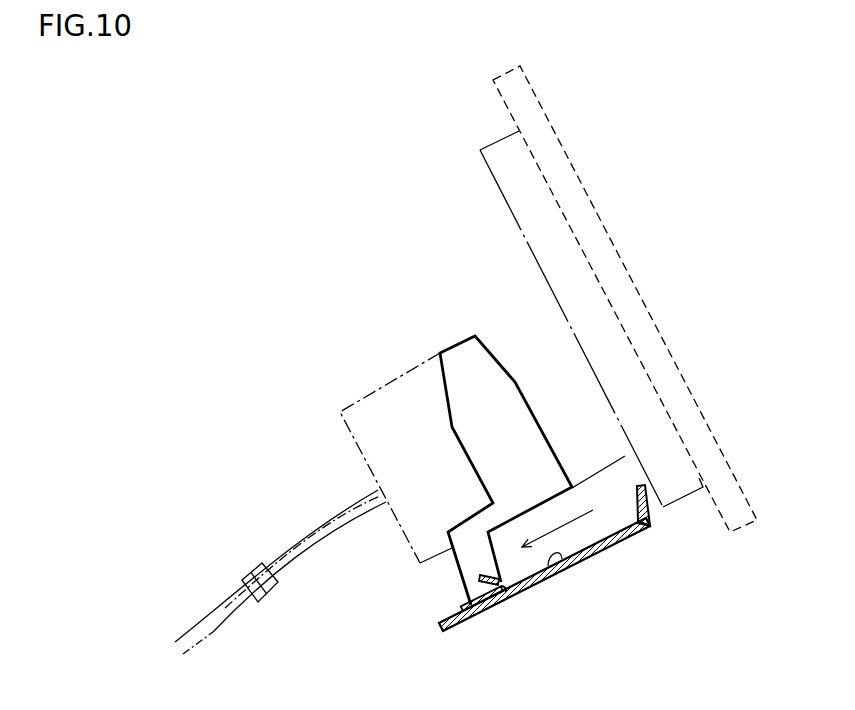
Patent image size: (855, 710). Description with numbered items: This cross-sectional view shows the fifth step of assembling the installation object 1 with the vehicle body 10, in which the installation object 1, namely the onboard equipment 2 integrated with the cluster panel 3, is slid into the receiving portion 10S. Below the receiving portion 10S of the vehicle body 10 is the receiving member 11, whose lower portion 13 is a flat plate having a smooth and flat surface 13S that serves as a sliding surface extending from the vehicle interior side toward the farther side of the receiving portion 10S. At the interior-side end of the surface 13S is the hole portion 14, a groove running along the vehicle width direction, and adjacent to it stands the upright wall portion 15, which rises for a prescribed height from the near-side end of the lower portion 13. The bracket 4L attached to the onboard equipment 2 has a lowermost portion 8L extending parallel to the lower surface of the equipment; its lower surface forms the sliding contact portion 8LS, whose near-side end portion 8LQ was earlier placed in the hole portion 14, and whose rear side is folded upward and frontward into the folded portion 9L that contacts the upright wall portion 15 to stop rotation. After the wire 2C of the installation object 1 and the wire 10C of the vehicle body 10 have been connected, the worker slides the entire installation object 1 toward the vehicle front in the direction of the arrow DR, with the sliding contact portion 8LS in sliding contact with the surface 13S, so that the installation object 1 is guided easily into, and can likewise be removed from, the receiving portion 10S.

The installation object 1 is at (433, 247).
The onboard equipment 2 is at (553, 297).
The cluster panel 3 is at (618, 283).
The bracket 4L is at (423, 358).
The arrow DR is at (563, 523).
The wire 2C is at (308, 527).
The wire 10C is at (212, 612).
The vehicle body 10 is at (180, 600).
The receiving portion 10S is at (470, 371).
The lowermost portion 8L is at (463, 605).
The near-side end portion 8LQ is at (503, 591).
The sliding contact portion 8LS is at (478, 613).
The folded portion 9L is at (480, 578).
The receiving member 11 is at (507, 618).
The lower portion 13 is at (592, 556).
The surface 13S is at (553, 560).
The hole portion 14 is at (634, 535).
The upright wall portion 15 is at (650, 514).